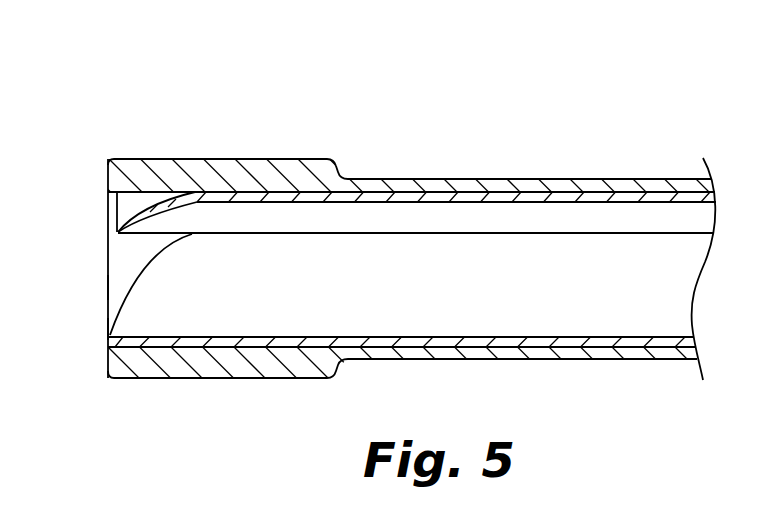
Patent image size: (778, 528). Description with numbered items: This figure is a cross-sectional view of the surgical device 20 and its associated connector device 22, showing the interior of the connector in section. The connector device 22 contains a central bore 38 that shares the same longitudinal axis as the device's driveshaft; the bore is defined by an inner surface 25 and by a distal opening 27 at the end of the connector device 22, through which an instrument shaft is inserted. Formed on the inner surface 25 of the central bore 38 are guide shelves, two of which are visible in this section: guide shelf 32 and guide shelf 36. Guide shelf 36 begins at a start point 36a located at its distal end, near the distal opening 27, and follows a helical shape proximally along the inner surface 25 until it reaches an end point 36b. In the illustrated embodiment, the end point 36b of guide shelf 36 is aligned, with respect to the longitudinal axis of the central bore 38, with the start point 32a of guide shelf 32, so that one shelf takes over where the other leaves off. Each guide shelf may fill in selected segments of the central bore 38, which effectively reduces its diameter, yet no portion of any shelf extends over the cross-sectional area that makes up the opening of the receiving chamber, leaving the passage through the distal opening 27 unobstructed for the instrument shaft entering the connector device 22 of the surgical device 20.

The surgical device 20 is at (459, 245).
The connector device 22 is at (389, 235).
The inner surface 25 is at (54, 298).
The distal opening 27 is at (60, 343).
The guide shelf 32 is at (412, 227).
The start point of guide shelf 32 32a is at (126, 197).
The guide shelf 36 is at (380, 287).
The start point of guide shelf 36 36a is at (92, 380).
The end point of guide shelf 36 36b is at (101, 242).
The central bore 38 is at (64, 268).